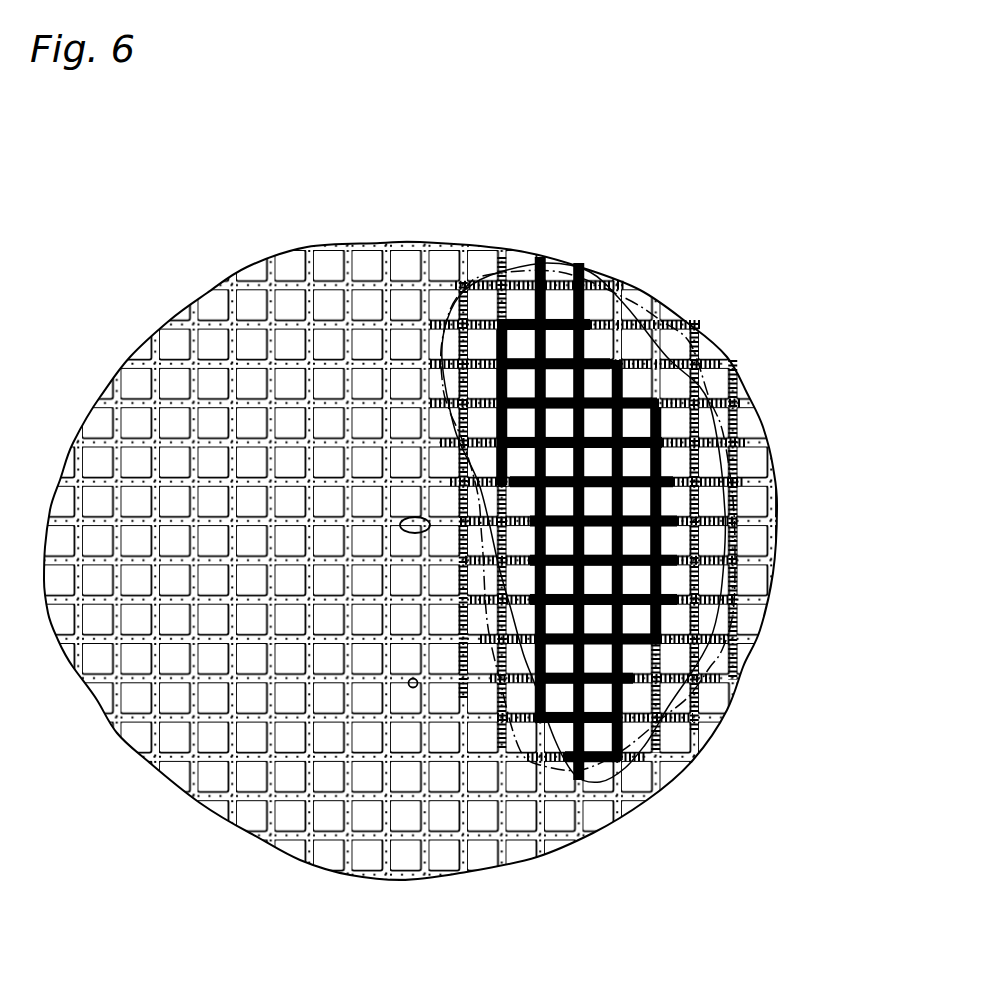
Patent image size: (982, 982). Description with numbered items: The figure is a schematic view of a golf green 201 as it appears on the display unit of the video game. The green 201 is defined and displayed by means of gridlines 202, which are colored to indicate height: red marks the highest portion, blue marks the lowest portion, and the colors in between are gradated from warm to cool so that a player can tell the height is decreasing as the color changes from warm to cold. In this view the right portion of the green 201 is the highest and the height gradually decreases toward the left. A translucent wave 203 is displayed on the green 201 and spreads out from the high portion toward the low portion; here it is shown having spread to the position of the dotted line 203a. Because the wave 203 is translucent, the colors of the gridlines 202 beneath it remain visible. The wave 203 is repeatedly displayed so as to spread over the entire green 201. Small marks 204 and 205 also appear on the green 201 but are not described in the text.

The green 201 is at (598, 274).
The gridlines 202 is at (523, 835).
The translucent wave 203 is at (710, 418).
The dotted line 203a is at (717, 663).
The defect 204 is at (408, 519).
The defect 205 is at (409, 680).